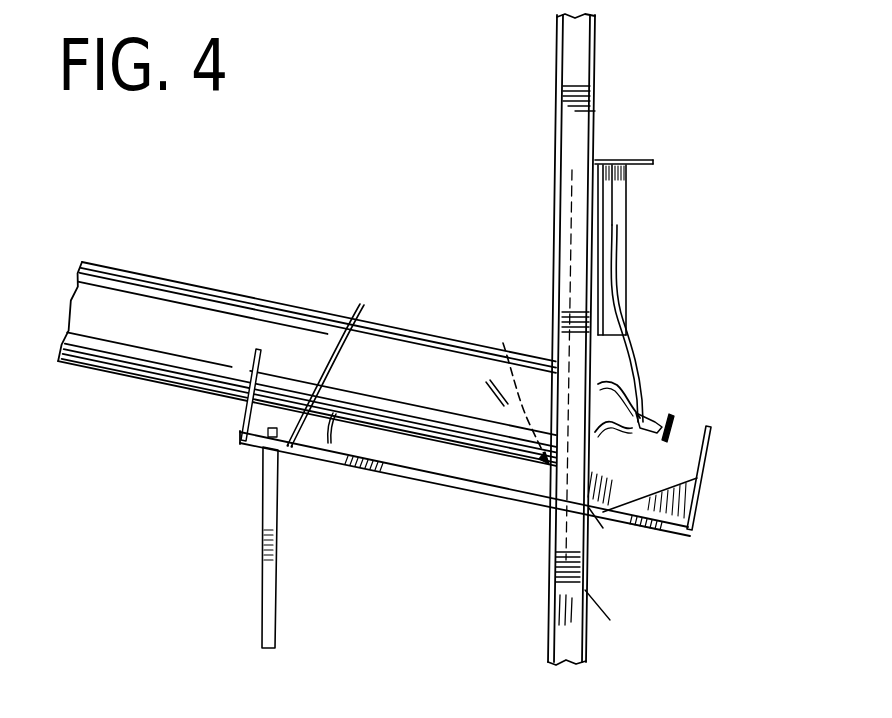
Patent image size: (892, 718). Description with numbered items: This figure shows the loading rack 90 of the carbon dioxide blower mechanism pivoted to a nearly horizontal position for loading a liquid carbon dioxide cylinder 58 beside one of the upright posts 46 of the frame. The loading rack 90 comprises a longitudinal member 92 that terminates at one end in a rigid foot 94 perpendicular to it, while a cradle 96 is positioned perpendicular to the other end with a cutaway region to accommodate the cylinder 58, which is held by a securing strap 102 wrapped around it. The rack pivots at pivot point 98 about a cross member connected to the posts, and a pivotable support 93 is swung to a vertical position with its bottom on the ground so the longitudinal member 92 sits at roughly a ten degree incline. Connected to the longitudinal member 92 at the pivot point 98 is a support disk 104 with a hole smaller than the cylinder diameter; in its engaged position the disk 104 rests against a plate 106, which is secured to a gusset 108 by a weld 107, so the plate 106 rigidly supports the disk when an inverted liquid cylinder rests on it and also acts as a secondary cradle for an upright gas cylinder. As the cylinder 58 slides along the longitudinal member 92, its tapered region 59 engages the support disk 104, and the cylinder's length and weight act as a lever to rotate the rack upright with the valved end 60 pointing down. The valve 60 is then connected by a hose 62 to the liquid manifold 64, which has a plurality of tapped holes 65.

The post 46 is at (575, 86).
The cylinder containing liquid carbon dioxide 58 is at (163, 291).
The tapered region 59 is at (598, 388).
The valved end 60 is at (668, 422).
The hose 62 is at (583, 328).
The liquid manifold 64 is at (604, 255).
The tapped hole 65 is at (612, 228).
The loading rack 90 is at (320, 456).
The longitudinal member 92 is at (428, 474).
The pivotable support 93 is at (269, 620).
The rigid foot 94 is at (711, 455).
The cradle 96 is at (244, 408).
The pivot point 98 is at (552, 510).
The securing strap 102 is at (350, 320).
The support disk 104 is at (605, 354).
The plate 106 is at (595, 468).
The weld 107 is at (592, 512).
The gusset 108 is at (614, 494).